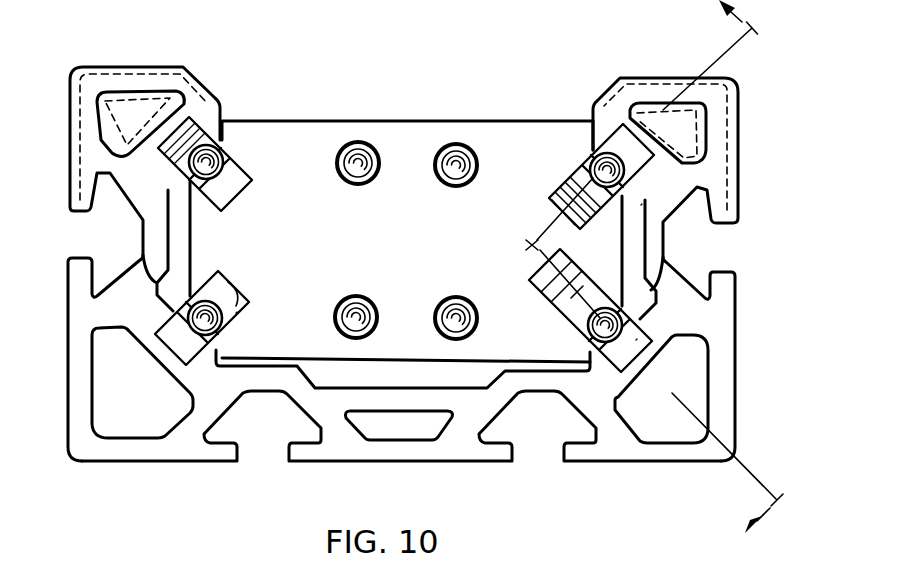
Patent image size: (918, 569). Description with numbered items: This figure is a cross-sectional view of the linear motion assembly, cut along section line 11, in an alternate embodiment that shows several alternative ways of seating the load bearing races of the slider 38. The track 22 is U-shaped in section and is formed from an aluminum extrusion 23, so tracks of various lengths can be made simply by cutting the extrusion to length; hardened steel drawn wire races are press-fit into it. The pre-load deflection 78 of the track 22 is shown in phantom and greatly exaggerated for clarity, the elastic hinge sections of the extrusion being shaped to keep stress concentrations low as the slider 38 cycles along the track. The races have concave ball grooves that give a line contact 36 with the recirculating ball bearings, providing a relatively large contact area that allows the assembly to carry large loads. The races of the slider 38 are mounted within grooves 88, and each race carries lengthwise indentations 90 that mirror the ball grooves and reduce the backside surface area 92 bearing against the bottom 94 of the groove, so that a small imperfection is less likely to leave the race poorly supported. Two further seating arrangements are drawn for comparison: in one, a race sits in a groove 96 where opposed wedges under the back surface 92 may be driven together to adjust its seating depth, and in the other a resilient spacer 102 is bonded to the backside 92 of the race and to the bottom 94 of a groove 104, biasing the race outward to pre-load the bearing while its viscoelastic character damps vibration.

The section line 11 is at (654, 277).
The track 22 is at (632, 468).
The aluminum extrusion 23 is at (737, 376).
The line contact 36 is at (640, 330).
The slider 38 is at (432, 121).
The pre-load deflection 78 is at (213, 100).
The grooves 88 is at (232, 152).
The indentations 90 is at (236, 196).
The backside surface area 92 is at (228, 263).
The bottom of the groove 94 is at (236, 287).
The groove 96 is at (540, 307).
The resilient spacer 102 is at (550, 207).
The groove 104 is at (567, 223).